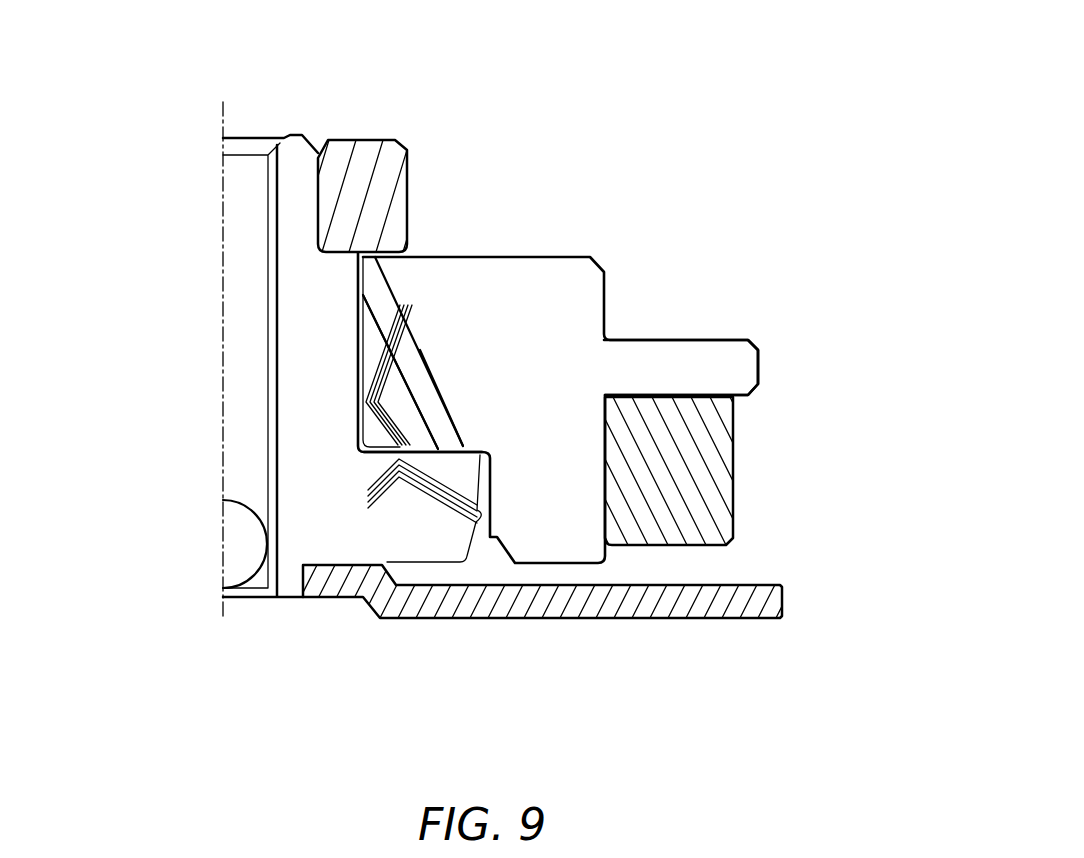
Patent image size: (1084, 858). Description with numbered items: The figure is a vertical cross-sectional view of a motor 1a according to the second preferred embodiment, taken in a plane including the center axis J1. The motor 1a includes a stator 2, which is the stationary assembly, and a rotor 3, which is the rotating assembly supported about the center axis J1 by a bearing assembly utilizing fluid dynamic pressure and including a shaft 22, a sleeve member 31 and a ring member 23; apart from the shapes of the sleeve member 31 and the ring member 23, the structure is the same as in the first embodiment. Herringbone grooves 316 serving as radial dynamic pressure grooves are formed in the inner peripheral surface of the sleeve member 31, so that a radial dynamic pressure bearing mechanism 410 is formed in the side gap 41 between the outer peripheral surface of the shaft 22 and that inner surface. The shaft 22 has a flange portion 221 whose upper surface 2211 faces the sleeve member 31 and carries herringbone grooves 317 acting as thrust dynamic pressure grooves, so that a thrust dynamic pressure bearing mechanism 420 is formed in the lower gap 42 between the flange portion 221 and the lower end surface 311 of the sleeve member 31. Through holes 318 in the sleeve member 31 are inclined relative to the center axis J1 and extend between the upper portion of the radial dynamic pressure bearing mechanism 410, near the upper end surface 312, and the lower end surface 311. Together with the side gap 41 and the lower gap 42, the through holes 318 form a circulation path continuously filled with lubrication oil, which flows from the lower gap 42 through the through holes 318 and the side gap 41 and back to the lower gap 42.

The motor 1a is at (120, 55).
The center axis J1 is at (222, 115).
The stator 2 is at (276, 667).
The shaft 22 is at (290, 137).
The ring member 23 is at (383, 142).
The flange portion 221 is at (395, 523).
The upper surface 2211 is at (473, 442).
The rotor 3 is at (751, 180).
The sleeve member 31 is at (723, 340).
The upper end surface 312 is at (528, 245).
The lower end surface 311 is at (425, 467).
The herringbone grooves 316 is at (401, 392).
The herringbone grooves 317 is at (366, 458).
The through holes 318 is at (397, 302).
The radial dynamic pressure bearing mechanism 410 is at (129, 238).
The side gap 41 is at (351, 289).
The thrust dynamic pressure bearing mechanism 420 is at (464, 704).
The lower gap 42 is at (448, 467).